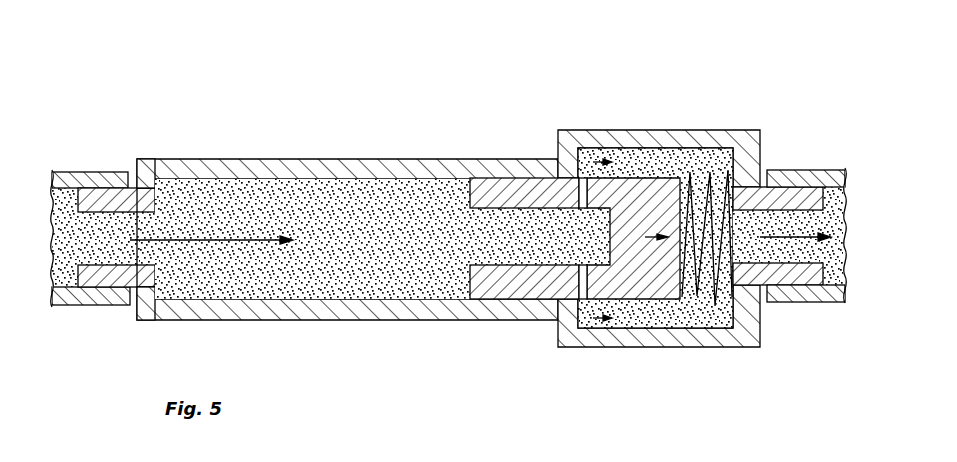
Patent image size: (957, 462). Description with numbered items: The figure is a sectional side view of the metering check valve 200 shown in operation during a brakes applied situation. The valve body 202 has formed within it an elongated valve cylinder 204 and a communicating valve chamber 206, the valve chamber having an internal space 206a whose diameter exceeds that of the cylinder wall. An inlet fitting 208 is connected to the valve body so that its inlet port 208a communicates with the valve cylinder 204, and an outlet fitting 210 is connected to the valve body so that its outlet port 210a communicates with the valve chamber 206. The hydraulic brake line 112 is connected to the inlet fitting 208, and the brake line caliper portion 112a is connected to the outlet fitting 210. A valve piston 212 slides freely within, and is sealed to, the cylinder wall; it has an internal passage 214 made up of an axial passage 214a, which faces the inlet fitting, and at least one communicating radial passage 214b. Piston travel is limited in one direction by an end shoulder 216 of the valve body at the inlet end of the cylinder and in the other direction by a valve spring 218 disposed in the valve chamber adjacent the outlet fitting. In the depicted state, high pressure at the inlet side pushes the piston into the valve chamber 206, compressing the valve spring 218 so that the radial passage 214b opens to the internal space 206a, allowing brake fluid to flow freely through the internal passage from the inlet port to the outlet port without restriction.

The metering check valve 200 is at (714, 82).
The valve body 202 is at (365, 135).
The valve cylinder 204 is at (281, 180).
The valve chamber 206 is at (646, 158).
The internal space 206a is at (643, 317).
The inlet fitting 208 is at (120, 172).
The inlet port 208a is at (122, 250).
The outlet fitting 210 is at (776, 187).
The outlet port 210a is at (788, 300).
The valve piston 212 is at (488, 300).
The internal passage 214 is at (536, 272).
The axial passage 214a is at (487, 235).
The radial passage 214b is at (580, 290).
The end shoulder 216 is at (180, 178).
The valve spring 218 is at (713, 295).
The hydraulic brake line 112 is at (115, 305).
The brake line caliper portion 112a is at (783, 268).